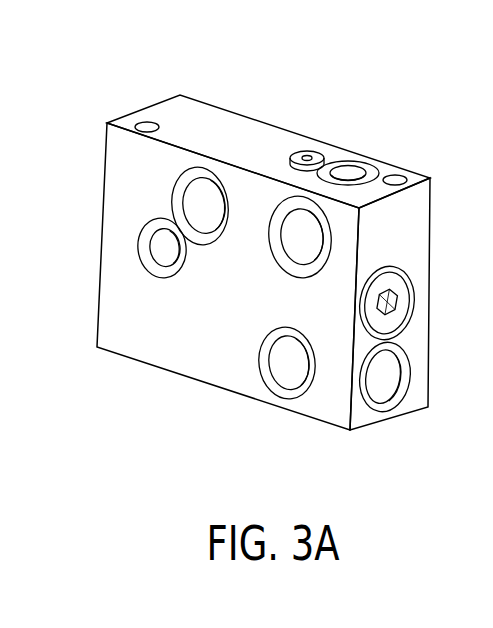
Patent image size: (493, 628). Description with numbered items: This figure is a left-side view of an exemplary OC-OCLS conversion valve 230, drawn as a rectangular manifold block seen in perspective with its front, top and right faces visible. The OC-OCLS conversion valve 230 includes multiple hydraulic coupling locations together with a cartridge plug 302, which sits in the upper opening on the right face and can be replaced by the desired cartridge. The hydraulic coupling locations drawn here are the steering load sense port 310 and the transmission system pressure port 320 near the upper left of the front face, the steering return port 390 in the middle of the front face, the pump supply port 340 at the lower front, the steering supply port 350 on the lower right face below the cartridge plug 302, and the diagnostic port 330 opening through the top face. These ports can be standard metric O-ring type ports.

The OC-OCLS conversion valve 230 is at (268, 94).
The cartridge plug 302 is at (392, 300).
The steering load sense port 310 is at (160, 255).
The transmission system pressure port 320 is at (203, 210).
The diagnostic port 330 is at (350, 170).
The pump supply port 340 is at (287, 383).
The steering supply port 350 is at (380, 390).
The steering return port 390 is at (300, 238).